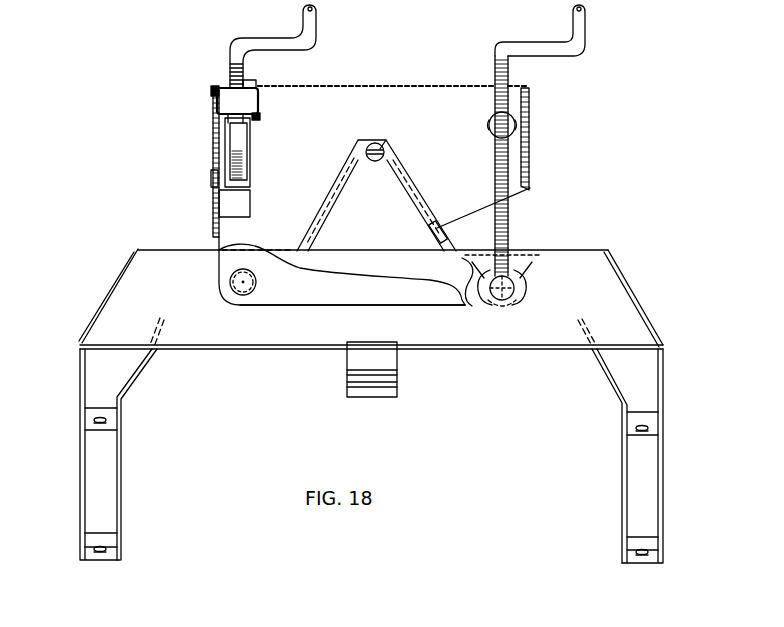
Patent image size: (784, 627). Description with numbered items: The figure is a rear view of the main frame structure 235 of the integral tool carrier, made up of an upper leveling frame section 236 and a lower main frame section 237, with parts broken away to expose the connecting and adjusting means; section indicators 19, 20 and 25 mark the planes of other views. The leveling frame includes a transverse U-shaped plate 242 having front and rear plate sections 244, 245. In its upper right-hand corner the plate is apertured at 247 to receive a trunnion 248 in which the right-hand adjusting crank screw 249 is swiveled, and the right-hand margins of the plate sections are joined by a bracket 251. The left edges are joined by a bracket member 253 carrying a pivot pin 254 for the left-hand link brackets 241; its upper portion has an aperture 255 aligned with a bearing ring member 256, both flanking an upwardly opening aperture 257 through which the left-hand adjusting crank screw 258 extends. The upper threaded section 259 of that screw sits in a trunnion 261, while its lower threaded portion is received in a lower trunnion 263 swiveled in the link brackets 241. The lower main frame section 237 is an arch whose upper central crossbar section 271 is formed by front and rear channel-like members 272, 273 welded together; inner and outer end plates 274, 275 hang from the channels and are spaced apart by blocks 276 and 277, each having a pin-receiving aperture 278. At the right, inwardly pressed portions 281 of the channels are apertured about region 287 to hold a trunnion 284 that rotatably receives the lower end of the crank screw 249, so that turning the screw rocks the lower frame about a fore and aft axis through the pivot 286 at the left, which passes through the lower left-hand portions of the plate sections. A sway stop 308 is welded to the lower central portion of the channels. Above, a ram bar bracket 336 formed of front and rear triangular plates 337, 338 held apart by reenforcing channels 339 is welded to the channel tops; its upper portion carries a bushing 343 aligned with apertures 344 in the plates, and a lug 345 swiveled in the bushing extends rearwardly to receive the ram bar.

The section line 19- 19 is at (500, 210).
The section line 20- 20 is at (458, 255).
The section line 25- 25 is at (335, 352).
The main frame structure 235 is at (618, 162).
The upper leveling frame section 236 is at (230, 135).
The lower main frame section 237 is at (96, 310).
The left-hand link brackets 241 is at (236, 193).
The plate 242 is at (333, 86).
The front plate section 244 is at (455, 88).
The rear plate section 245 is at (284, 296).
The aperture 247 is at (514, 123).
The trunnion 248 is at (492, 130).
The adjusting crank screw 249 is at (508, 55).
The bracket 251 is at (530, 138).
The bracket member 253 is at (213, 205).
The pivot pin 254 is at (211, 180).
The aperture 255 is at (214, 90).
The bearing ring member 256 is at (258, 116).
The upwardly opening aperture 257 is at (285, 73).
The left-hand adjusting crank screw 258 is at (260, 47).
The upper threaded section 259 is at (230, 72).
The trunnion 261 is at (224, 100).
The lower trunnion 263 is at (238, 137).
The upper central crossbar section 271 is at (265, 347).
The front channel-like member 272 is at (307, 336).
The rear channel-like member 273 is at (515, 277).
The inner end plate 274 is at (118, 465).
The outer end plate 275 is at (82, 462).
The block 276 is at (110, 410).
The block 277 is at (108, 535).
The pin-receiving aperture 278 is at (97, 420).
The inwardly pressed portions 281 is at (518, 298).
The trunnion 284 is at (500, 302).
The pivot 286 is at (230, 282).
The clamp 287 is at (514, 288).
The sway stop 308 is at (398, 377).
The ram bar bracket 336 is at (398, 189).
The front triangular plate 337 is at (418, 238).
The rear triangular plate 338 is at (359, 238).
The reenforcing channels 339 is at (328, 210).
The bushing 343 is at (375, 137).
The apertures 344 is at (374, 162).
The lug 345 is at (387, 155).